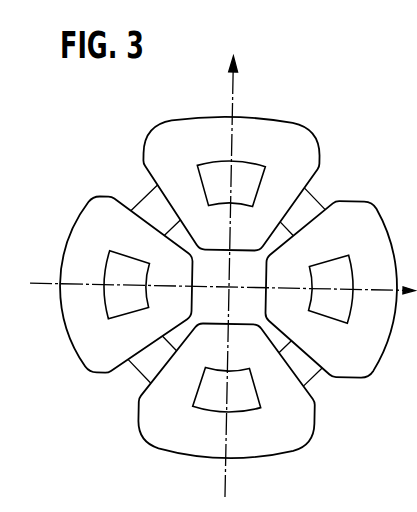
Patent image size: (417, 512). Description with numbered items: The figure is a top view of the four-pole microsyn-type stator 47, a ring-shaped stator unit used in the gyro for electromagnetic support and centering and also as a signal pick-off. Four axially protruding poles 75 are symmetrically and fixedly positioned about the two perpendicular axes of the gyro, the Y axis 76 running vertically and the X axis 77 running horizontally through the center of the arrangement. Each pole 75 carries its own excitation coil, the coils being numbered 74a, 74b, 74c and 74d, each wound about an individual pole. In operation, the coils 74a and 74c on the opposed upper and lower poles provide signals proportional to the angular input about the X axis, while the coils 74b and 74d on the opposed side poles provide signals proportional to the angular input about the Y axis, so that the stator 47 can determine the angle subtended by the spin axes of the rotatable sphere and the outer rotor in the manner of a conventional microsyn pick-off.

The four-pole stator 47 is at (319, 196).
The coil 74a is at (153, 156).
The coil 74b is at (347, 204).
The coil 74c is at (167, 436).
The coil 74d is at (90, 358).
The pole 75 is at (246, 183).
The y axis 76 is at (232, 94).
The x axis 77 is at (46, 282).